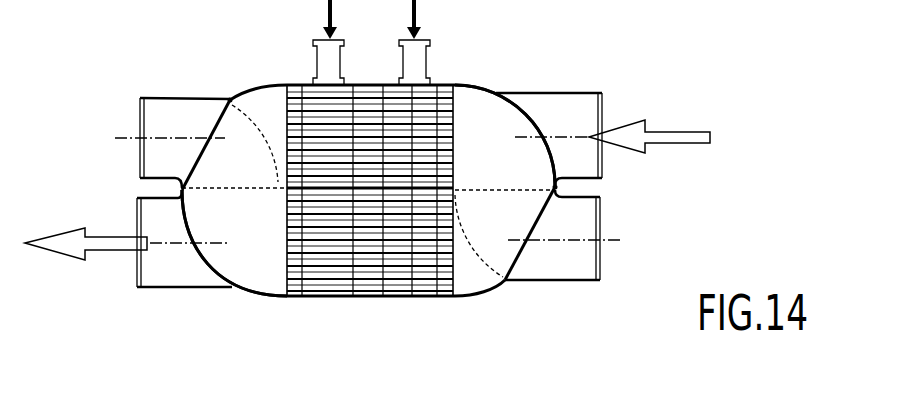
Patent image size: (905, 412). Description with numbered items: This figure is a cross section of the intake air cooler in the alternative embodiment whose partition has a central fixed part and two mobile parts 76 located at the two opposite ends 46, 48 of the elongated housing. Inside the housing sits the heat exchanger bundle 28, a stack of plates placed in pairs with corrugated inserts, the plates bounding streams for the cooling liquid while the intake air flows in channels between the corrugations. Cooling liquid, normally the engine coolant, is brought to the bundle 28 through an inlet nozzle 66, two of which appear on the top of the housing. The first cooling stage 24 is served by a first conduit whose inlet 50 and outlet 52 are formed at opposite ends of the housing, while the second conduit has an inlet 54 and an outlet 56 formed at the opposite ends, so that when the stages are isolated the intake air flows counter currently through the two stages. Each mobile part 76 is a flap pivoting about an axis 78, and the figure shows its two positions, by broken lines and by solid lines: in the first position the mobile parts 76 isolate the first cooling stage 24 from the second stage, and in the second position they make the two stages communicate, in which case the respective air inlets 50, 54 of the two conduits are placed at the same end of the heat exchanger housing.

The first cooling stage 24 is at (474, 128).
The heat exchanger bundle 28 is at (419, 268).
The end of housing 46 is at (212, 270).
The end of housing 48 is at (537, 118).
The inlet of first conduit 50 is at (590, 97).
The outlet of first conduit 52 is at (140, 125).
The inlet of second conduit 54 is at (590, 258).
The outlet of second conduit 56 is at (138, 273).
The inlet nozzle 66 is at (317, 62).
The mobile part 76 is at (216, 125).
The axis 78 is at (230, 99).